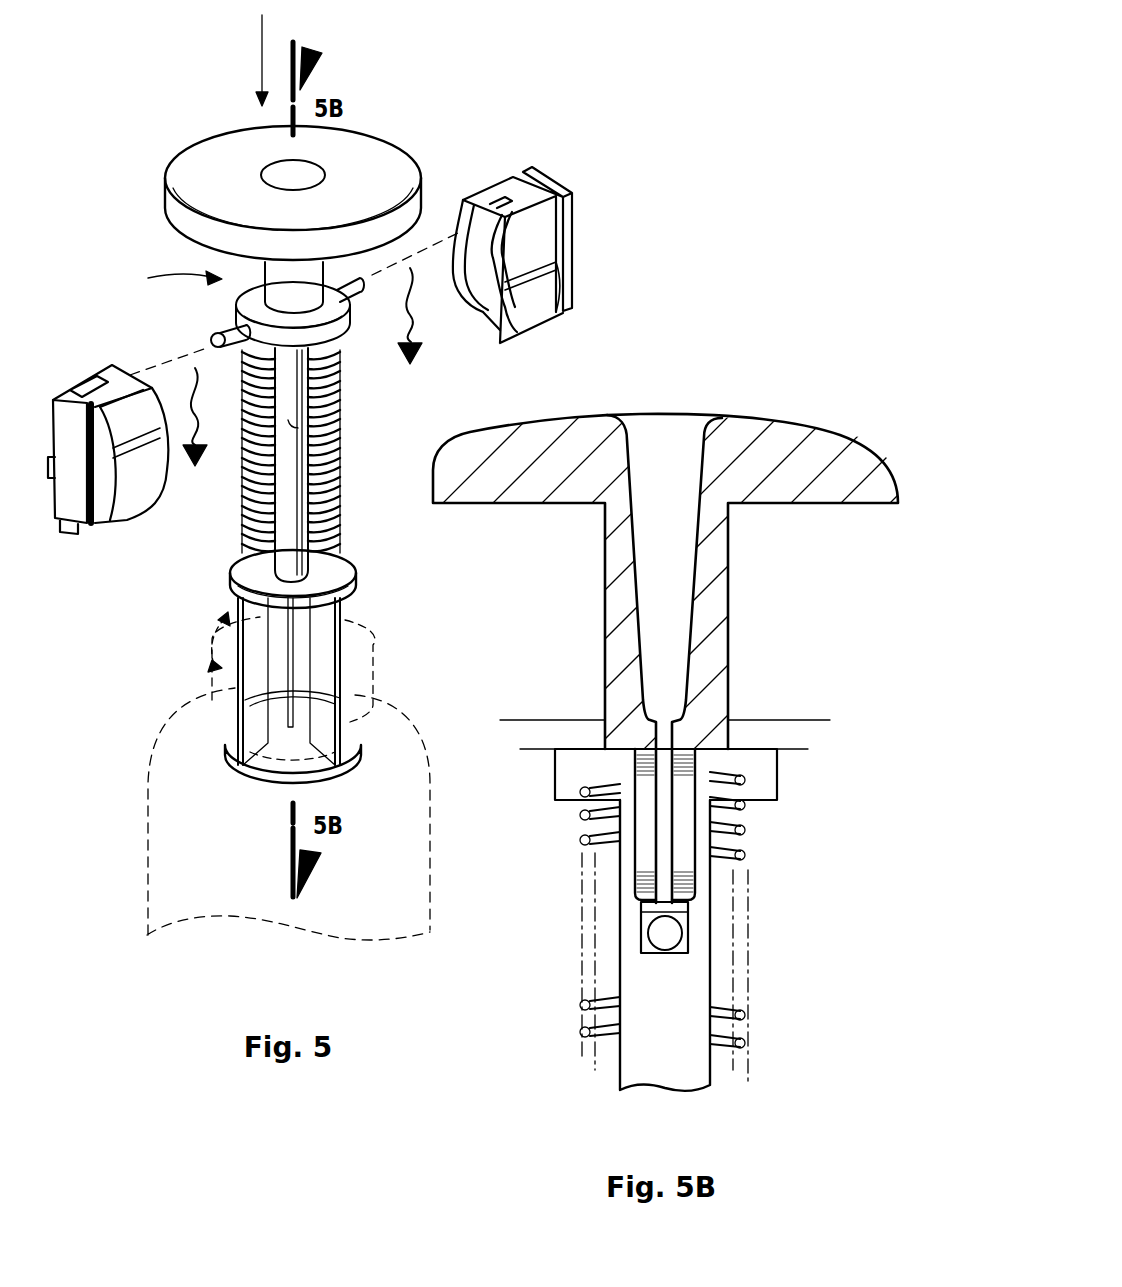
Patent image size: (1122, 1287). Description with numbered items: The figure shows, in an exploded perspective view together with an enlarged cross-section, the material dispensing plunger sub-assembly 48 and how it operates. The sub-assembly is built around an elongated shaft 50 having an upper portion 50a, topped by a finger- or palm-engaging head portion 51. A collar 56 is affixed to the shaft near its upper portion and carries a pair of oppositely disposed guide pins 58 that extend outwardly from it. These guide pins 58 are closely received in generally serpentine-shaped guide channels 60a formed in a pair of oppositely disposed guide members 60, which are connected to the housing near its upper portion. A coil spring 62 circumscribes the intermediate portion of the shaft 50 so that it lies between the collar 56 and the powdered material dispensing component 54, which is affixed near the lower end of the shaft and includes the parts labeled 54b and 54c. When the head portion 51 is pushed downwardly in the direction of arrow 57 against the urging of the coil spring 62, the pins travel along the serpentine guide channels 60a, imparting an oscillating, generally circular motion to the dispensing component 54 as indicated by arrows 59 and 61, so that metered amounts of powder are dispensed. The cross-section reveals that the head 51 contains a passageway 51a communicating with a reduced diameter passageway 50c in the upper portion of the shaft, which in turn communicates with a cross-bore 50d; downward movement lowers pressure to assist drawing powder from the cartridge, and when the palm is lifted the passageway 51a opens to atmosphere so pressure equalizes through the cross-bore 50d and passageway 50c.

In FIG. 5, the plunger sub-assembly 48 is at (169, 270).
In FIG. 5, the elongated shaft 50 is at (345, 418).
In FIG. 5B, the elongated shaft 50 is at (680, 982).
In FIG. 5B, the upper portion 50a is at (712, 905).
In FIG. 5B, the reduced diameter passageway 50c is at (668, 828).
In FIG. 5B, the cross-bore 50d is at (672, 930).
In FIG. 5, the head portion 51 is at (410, 168).
In FIG. 5B, the head portion 51 is at (790, 420).
In FIG. 5, the passageway 51a is at (318, 170).
In FIG. 5B, the passageway 51a is at (705, 592).
In FIG. 5, the powdered material dispensing component 54 is at (236, 673).
In FIG. 5, the bottom ring 54b is at (260, 780).
In FIG. 5, the cage bars 54c is at (340, 640).
In FIG. 5, the collar 56 is at (340, 340).
In FIG. 5B, the collar 56 is at (778, 770).
In FIG. 5, the arrow 57 is at (262, 52).
In FIG. 5, the guide pins 58 is at (240, 333).
In FIG. 5, the arrow 59 is at (198, 420).
In FIG. 5, the guide members 60 is at (105, 370).
In FIG. 5, the guide channels 60a is at (130, 378).
In FIG. 5, the arrow 61 is at (225, 625).
In FIG. 5, the coil spring 62 is at (337, 456).
In FIG. 5B, the coil spring 62 is at (582, 838).